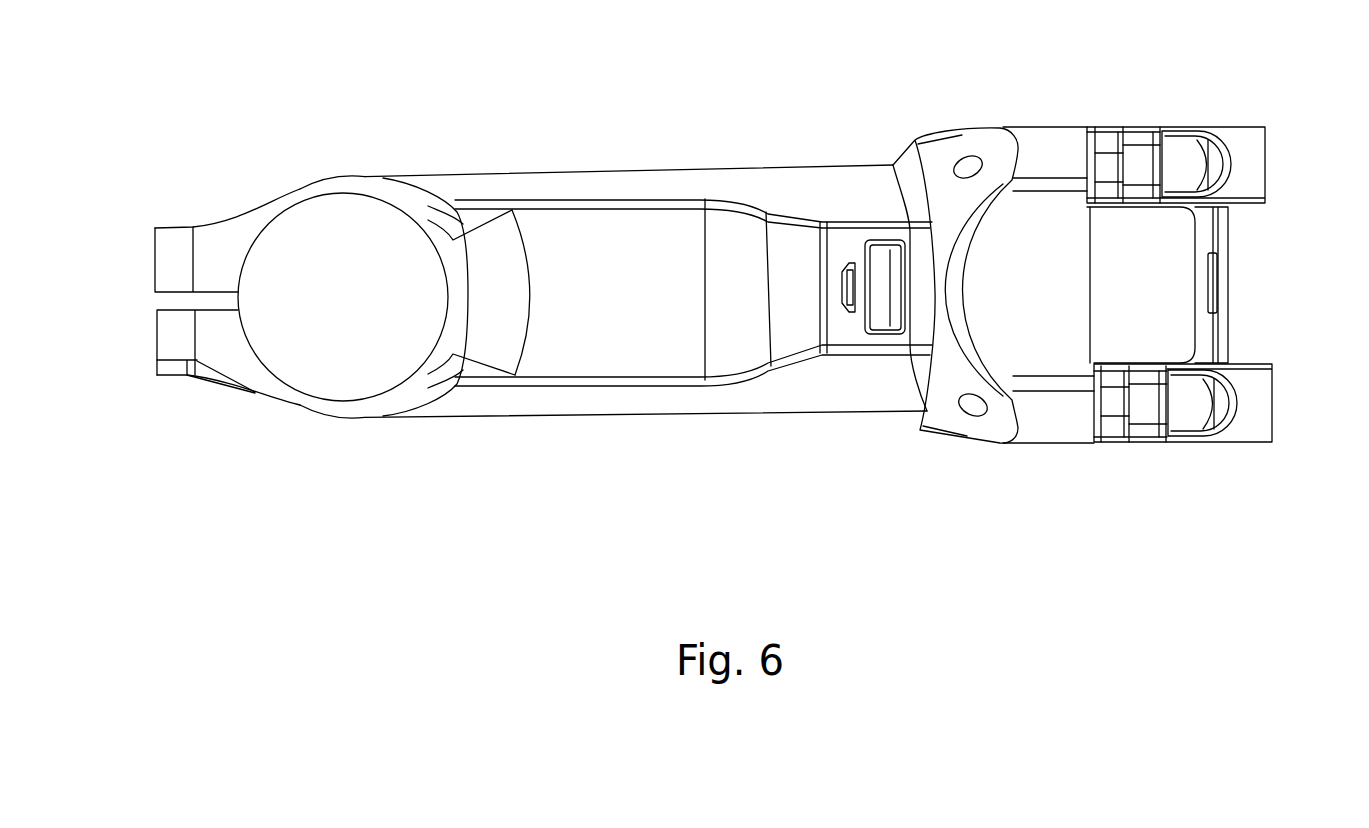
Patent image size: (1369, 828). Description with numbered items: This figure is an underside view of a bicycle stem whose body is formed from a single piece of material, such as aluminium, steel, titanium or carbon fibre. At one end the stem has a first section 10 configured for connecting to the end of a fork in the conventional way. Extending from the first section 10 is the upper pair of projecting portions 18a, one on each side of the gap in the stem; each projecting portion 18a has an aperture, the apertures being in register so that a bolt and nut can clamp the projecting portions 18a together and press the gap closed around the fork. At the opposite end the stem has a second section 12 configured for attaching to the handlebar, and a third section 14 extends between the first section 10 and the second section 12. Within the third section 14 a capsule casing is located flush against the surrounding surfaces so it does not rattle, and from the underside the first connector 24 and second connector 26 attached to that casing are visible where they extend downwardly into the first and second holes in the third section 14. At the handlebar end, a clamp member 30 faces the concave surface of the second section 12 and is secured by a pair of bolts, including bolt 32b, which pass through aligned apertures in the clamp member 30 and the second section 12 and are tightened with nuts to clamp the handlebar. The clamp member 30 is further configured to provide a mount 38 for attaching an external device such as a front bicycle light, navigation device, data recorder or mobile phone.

The first section 10 is at (157, 522).
The third section 14 is at (465, 522).
The second section 12 is at (989, 522).
The projecting portions 18a is at (178, 327).
The first connector 24 is at (892, 267).
The second connector 26 is at (847, 265).
The clamp member 30 is at (1257, 177).
The bolt 32b is at (1140, 432).
The mount 38 is at (1258, 208).